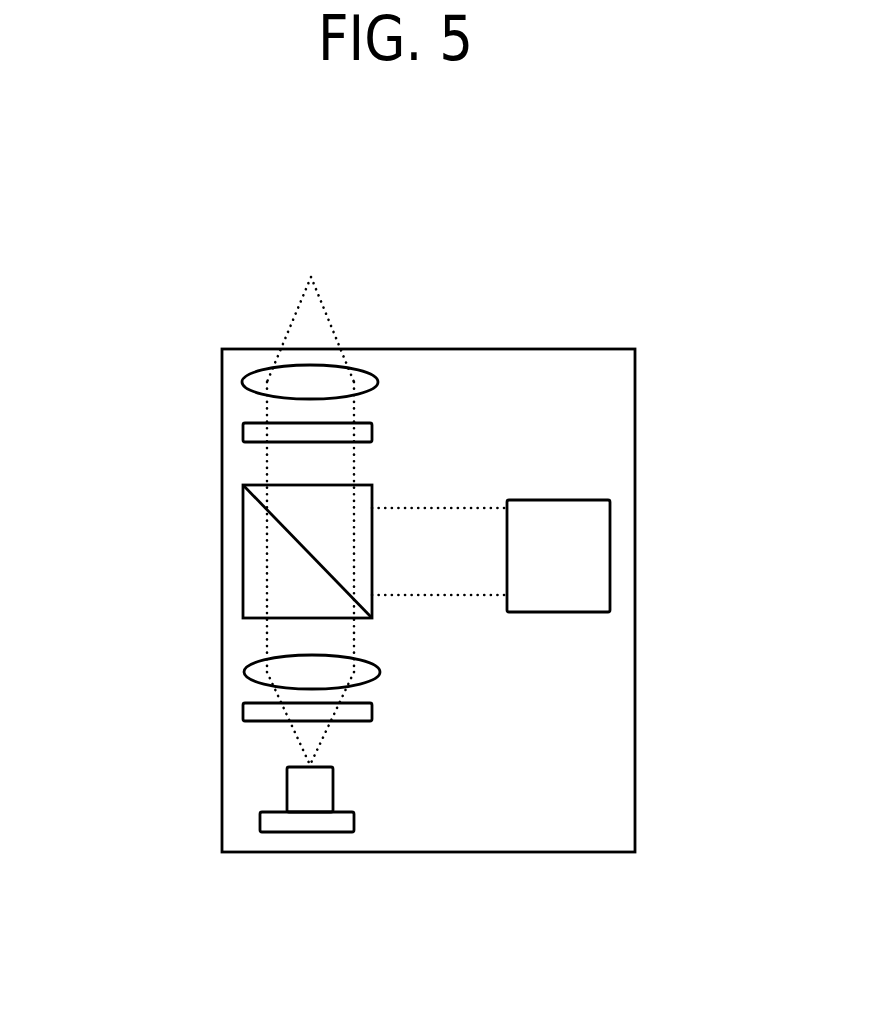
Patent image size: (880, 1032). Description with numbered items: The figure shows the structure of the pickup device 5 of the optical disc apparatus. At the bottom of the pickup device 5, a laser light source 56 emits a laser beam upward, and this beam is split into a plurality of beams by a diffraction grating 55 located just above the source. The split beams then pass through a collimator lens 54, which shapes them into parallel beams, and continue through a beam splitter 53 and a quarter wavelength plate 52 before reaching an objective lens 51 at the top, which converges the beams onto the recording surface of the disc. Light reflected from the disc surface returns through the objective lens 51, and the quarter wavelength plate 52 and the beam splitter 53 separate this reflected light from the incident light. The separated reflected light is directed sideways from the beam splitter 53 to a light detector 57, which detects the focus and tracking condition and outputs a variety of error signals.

The pickup device 5 is at (561, 350).
The objective lens 51 is at (245, 376).
The quarter wavelength plate 52 is at (243, 432).
The beam splitter 53 is at (243, 557).
The collimator lens 54 is at (242, 663).
The diffraction grating 55 is at (243, 710).
The laser light source 56 is at (287, 797).
The light detector 57 is at (613, 557).